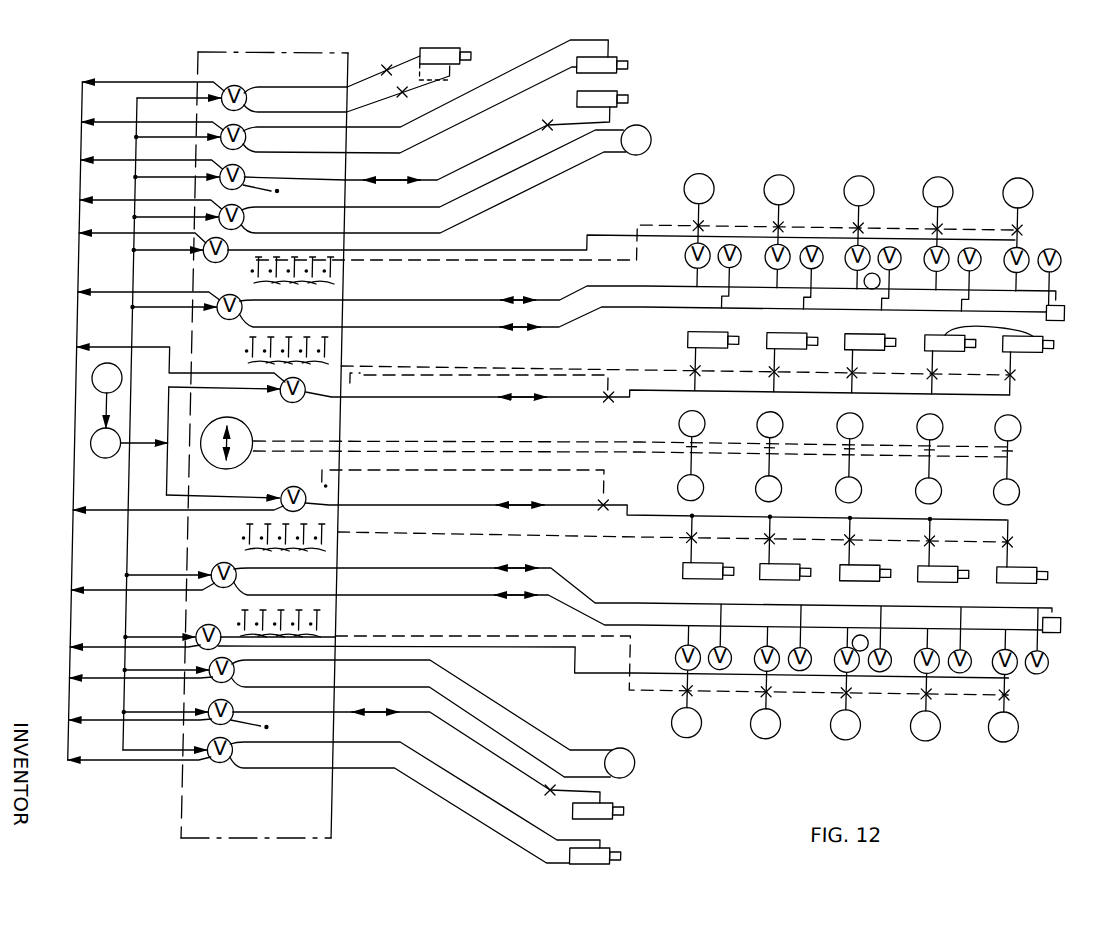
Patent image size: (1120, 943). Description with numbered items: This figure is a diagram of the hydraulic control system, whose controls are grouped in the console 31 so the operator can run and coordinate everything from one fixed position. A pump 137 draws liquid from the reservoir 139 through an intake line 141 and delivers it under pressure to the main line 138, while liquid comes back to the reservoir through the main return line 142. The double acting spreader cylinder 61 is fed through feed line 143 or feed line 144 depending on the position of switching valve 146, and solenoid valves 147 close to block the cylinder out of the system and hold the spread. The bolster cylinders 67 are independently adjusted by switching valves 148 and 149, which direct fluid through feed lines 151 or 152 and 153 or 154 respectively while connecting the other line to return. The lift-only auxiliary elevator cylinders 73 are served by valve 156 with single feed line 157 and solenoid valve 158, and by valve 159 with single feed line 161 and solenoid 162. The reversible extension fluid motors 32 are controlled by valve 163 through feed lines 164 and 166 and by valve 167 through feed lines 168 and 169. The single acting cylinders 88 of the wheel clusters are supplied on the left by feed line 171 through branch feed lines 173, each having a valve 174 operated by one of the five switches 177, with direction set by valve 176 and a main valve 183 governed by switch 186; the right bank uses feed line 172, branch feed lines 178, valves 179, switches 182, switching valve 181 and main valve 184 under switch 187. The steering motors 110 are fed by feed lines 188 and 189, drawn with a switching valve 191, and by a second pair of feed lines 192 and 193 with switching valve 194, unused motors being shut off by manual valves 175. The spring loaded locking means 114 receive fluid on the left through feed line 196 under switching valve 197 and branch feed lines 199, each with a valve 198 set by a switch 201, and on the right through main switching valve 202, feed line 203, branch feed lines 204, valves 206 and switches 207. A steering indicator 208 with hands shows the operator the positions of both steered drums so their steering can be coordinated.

The console 31 is at (189, 57).
The fluid motor 32 is at (644, 135).
The hydraulic cylinder 61 is at (455, 45).
The hydraulic cylinder 67 is at (608, 56).
The cylinder 73 is at (609, 93).
The single acting hydraulic cylinder 88 is at (715, 330).
The steering motor 110 is at (866, 458).
The locking means 114 is at (708, 184).
The pump 137 is at (108, 458).
The main line 138 is at (108, 540).
The reservoir 139 is at (90, 378).
The intake line 141 is at (90, 398).
The main return line 142 is at (92, 440).
The feed line 143 is at (374, 66).
The feed line 144 is at (392, 106).
The switching valve 146 is at (240, 98).
The solenoid valve 147 is at (382, 70).
The switching valve 148 is at (240, 137).
The switching valve 149 is at (240, 750).
The feed line 151 is at (486, 90).
The feed line 152 is at (452, 128).
The feed line 153 is at (392, 745).
The feed line 154 is at (404, 774).
The valve 156 is at (238, 170).
The single feed line 157 is at (452, 168).
The solenoid valve 158 is at (536, 124).
The valve 159 is at (214, 708).
The single feed line 161 is at (418, 710).
The solenoid 162 is at (536, 786).
The valve 163 is at (240, 217).
The feed line 164 is at (412, 216).
The feed line 166 is at (512, 199).
The valve 167 is at (240, 671).
The feed line 168 is at (470, 688).
The feed line 169 is at (398, 682).
The feed line 171 is at (455, 408).
The feed line 172 is at (475, 510).
The branch feed line 173 is at (876, 376).
The valve 174 is at (676, 364).
The manual valve 175 is at (871, 458).
The valve 176 is at (304, 398).
The switch 177 is at (338, 340).
The branch feed line 178 is at (701, 542).
The valve 179 is at (876, 547).
The switching valve 181 is at (306, 507).
The switch 182 is at (330, 552).
The main valve 183 is at (608, 405).
The main valve 184 is at (612, 500).
The switch 186 is at (444, 384).
The switch 187 is at (334, 487).
The feed line 188 is at (400, 290).
The feed line 189 is at (406, 315).
The valve 191 is at (240, 307).
The line 192 is at (414, 548).
The line 193 is at (414, 576).
The switching valve 194 is at (240, 575).
The feed line 196 is at (516, 250).
The switching valve 197 is at (224, 244).
The valve 198 is at (665, 231).
The branch feed line 199 is at (888, 215).
The switch 201 is at (330, 270).
The main switching valve 202 is at (204, 628).
The feed line 203 is at (476, 654).
The branch feed line 204 is at (672, 676).
The valve 206 is at (845, 707).
The switch 207 is at (330, 605).
The steering indicator 208 is at (252, 428).